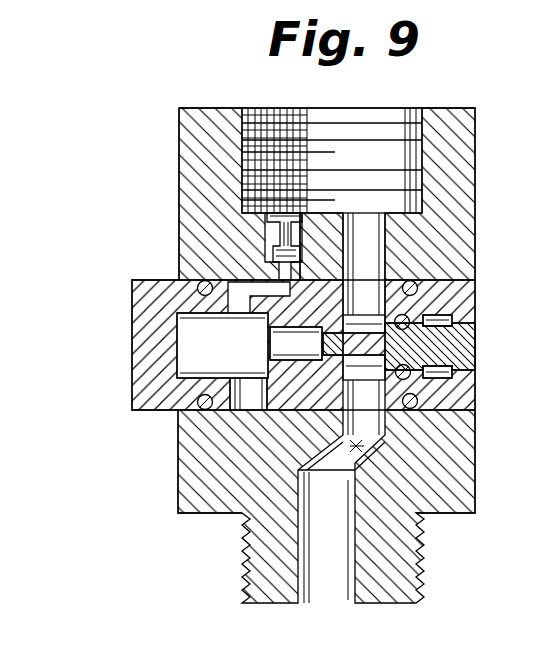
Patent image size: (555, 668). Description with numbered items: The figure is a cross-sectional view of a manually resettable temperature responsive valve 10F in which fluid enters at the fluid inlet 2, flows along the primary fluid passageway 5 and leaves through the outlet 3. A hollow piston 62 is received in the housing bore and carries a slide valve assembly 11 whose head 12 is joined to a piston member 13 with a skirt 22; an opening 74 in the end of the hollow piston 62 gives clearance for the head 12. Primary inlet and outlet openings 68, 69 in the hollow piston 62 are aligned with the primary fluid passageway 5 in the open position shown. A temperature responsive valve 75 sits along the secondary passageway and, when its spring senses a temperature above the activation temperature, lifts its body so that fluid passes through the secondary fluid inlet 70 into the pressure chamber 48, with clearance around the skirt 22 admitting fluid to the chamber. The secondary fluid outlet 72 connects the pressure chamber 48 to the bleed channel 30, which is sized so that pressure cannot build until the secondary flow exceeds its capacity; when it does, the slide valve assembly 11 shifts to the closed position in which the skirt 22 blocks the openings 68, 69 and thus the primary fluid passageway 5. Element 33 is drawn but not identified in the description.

The manually resettable temperature responsive valve 10F is at (170, 228).
The fluid inlet 2 is at (398, 118).
The temperature responsive valve 75 is at (303, 224).
The piston member 13 is at (346, 312).
The primary inlet opening 68 is at (380, 288).
The secondary fluid inlet 70 is at (255, 270).
The hollow piston 62 is at (126, 314).
The pressure chamber 48 is at (177, 330).
The skirt 22 is at (266, 337).
The secondary fluid outlet 72 is at (245, 388).
The slide valve assembly 11 is at (297, 375).
The head 12 is at (457, 352).
The opening 74 is at (462, 328).
The seal 33 is at (463, 376).
The bleed channel 30 is at (300, 443).
The outlet 3 is at (315, 604).
The primary outlet opening 69 is at (376, 406).
The primary fluid passageway 5 is at (362, 454).